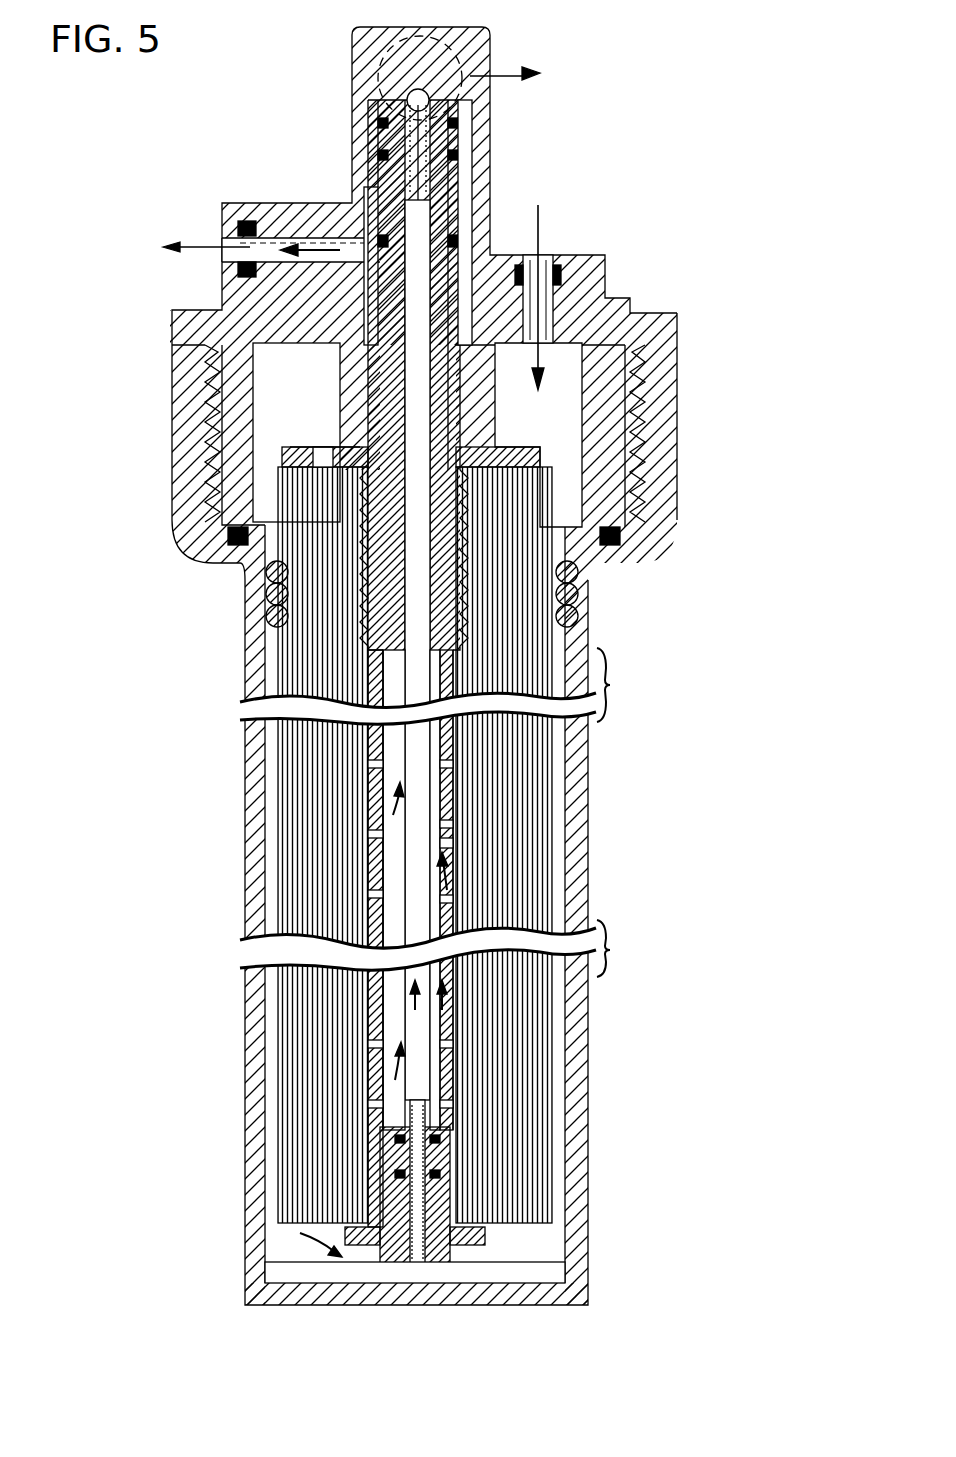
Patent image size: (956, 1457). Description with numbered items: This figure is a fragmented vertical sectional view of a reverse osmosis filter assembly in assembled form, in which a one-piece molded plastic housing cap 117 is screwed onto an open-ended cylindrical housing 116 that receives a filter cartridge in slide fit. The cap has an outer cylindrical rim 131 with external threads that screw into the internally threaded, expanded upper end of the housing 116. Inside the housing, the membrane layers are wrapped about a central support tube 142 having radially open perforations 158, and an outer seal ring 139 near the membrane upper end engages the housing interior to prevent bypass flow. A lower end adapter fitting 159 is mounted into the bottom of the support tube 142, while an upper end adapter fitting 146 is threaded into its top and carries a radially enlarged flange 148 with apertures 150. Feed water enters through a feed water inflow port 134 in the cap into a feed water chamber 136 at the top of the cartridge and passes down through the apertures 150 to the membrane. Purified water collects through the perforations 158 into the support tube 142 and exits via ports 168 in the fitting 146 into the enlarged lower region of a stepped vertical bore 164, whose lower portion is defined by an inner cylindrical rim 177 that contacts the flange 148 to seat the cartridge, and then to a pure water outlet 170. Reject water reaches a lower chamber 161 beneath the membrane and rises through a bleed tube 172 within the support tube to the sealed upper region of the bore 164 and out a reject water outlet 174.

The cylindrical housing 116 is at (612, 848).
The housing cap 117 is at (505, 131).
The outer cylindrical rim 131 is at (233, 483).
The feed water inflow port 134 is at (548, 263).
The feed water chamber 136 is at (268, 393).
The outer seal ring 139 is at (264, 592).
The central support tube 142 is at (367, 858).
The upper end adapter fitting 146 is at (485, 468).
The radially enlarged flange 148 is at (490, 472).
The apertures 150 is at (313, 457).
The perforations 158 is at (460, 896).
The lower end adapter fitting 159 is at (383, 1240).
The lower chamber 161 is at (280, 1254).
The stepped vertical bore 164 is at (468, 242).
The ports 168 is at (387, 277).
The pure water outlet 170 is at (222, 243).
The bleed tube 172 is at (405, 744).
The reject water outlet 174 is at (407, 97).
The inner cylindrical rim 177 is at (338, 382).